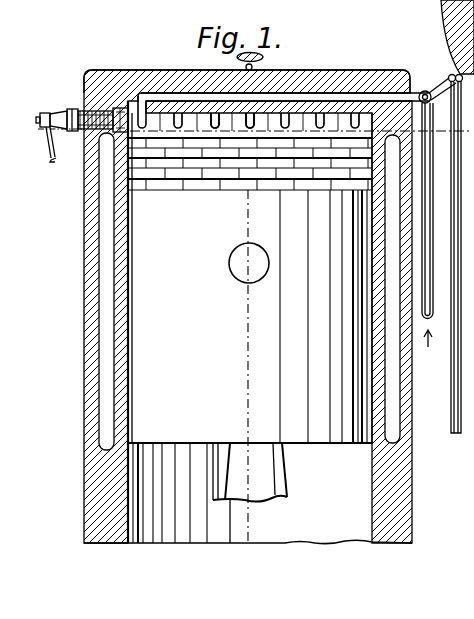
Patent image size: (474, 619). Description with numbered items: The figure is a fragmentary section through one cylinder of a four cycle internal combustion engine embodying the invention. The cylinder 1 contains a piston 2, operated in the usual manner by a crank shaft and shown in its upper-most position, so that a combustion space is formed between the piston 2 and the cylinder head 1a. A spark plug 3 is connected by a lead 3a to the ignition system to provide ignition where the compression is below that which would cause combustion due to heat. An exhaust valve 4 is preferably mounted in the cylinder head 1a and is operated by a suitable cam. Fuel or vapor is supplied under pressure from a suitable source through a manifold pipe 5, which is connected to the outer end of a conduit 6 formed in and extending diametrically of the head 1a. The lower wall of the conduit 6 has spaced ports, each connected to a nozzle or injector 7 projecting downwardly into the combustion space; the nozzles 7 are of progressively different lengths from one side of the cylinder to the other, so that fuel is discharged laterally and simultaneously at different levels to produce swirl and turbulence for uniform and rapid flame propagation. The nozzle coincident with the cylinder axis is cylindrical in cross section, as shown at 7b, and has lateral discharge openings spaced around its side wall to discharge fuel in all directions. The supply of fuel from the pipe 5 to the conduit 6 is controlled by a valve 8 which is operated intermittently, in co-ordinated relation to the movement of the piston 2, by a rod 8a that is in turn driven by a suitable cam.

The cylinder 1 is at (86, 313).
The cylinder head 1a is at (163, 70).
The piston 2 is at (296, 437).
The spark plug 3 is at (73, 109).
The lead 3a is at (53, 161).
The exhaust valve 4 is at (466, 153).
The pipe 5 is at (433, 216).
The conduit 6 is at (335, 97).
The nozzle 7 is at (168, 100).
The cylindrical nozzle 7b is at (236, 125).
The valve 8 is at (426, 90).
The rod 8a is at (451, 410).